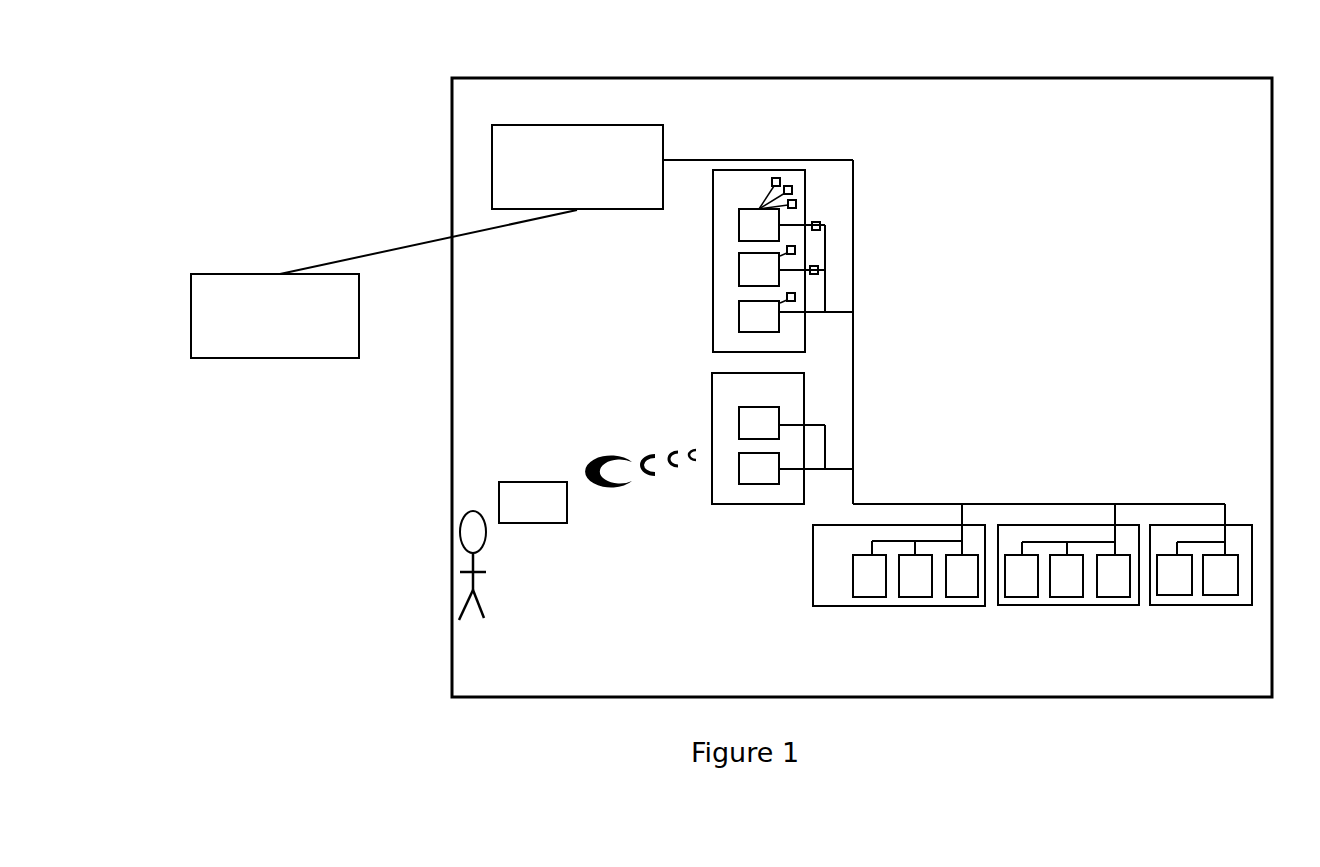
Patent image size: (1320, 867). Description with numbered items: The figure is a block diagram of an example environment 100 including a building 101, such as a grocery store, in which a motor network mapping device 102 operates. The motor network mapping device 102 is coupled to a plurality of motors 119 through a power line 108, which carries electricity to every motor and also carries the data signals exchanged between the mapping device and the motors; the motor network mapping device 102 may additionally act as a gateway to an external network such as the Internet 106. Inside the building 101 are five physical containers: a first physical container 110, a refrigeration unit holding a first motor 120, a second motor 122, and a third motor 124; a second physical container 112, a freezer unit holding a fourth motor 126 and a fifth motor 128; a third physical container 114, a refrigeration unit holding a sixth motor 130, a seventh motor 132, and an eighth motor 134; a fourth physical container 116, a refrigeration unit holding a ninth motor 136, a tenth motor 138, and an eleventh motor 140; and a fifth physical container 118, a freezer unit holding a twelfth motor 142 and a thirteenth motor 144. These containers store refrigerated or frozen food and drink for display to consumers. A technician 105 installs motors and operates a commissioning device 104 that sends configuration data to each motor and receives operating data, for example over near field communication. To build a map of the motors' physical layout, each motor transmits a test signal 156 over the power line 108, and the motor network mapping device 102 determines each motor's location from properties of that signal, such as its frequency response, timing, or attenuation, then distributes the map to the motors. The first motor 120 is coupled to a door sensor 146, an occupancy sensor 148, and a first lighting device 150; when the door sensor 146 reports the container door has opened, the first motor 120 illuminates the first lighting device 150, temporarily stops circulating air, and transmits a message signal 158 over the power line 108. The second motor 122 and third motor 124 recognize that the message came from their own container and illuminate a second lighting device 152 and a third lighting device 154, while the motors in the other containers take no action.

The environment 100 is at (360, 78).
The building 101 is at (883, 78).
The motor network mapping device 102 is at (672, 167).
The commissioning device 104 is at (533, 502).
The technician 105 is at (482, 617).
The Internet 106 is at (384, 284).
The power line 108 is at (853, 185).
The first physical container 110 is at (712, 200).
The second physical container 112 is at (778, 505).
The third physical container 114 is at (968, 522).
The fourth physical container 116 is at (1060, 523).
The fifth physical container 118 is at (1245, 523).
The plurality of motors 119 is at (1056, 286).
The first motor 120 is at (733, 223).
The second motor 122 is at (733, 268).
The third motor 124 is at (735, 313).
The fourth motor 126 is at (739, 415).
The fifth motor 128 is at (760, 484).
The sixth motor 130 is at (857, 597).
The seventh motor 132 is at (913, 597).
The eighth motor 134 is at (962, 597).
The ninth motor 136 is at (1020, 597).
The tenth motor 138 is at (1067, 597).
The eleventh motor 140 is at (1117, 597).
The twelfth motor 142 is at (1175, 597).
The thirteenth motor 144 is at (1223, 597).
The door sensor 146 is at (775, 178).
The occupancy sensor 148 is at (790, 187).
The first lighting device 150 is at (796, 201).
The second lighting device 152 is at (795, 249).
The third lighting device 154 is at (795, 298).
The test signal 156 is at (820, 224).
The message signal 158 is at (818, 272).